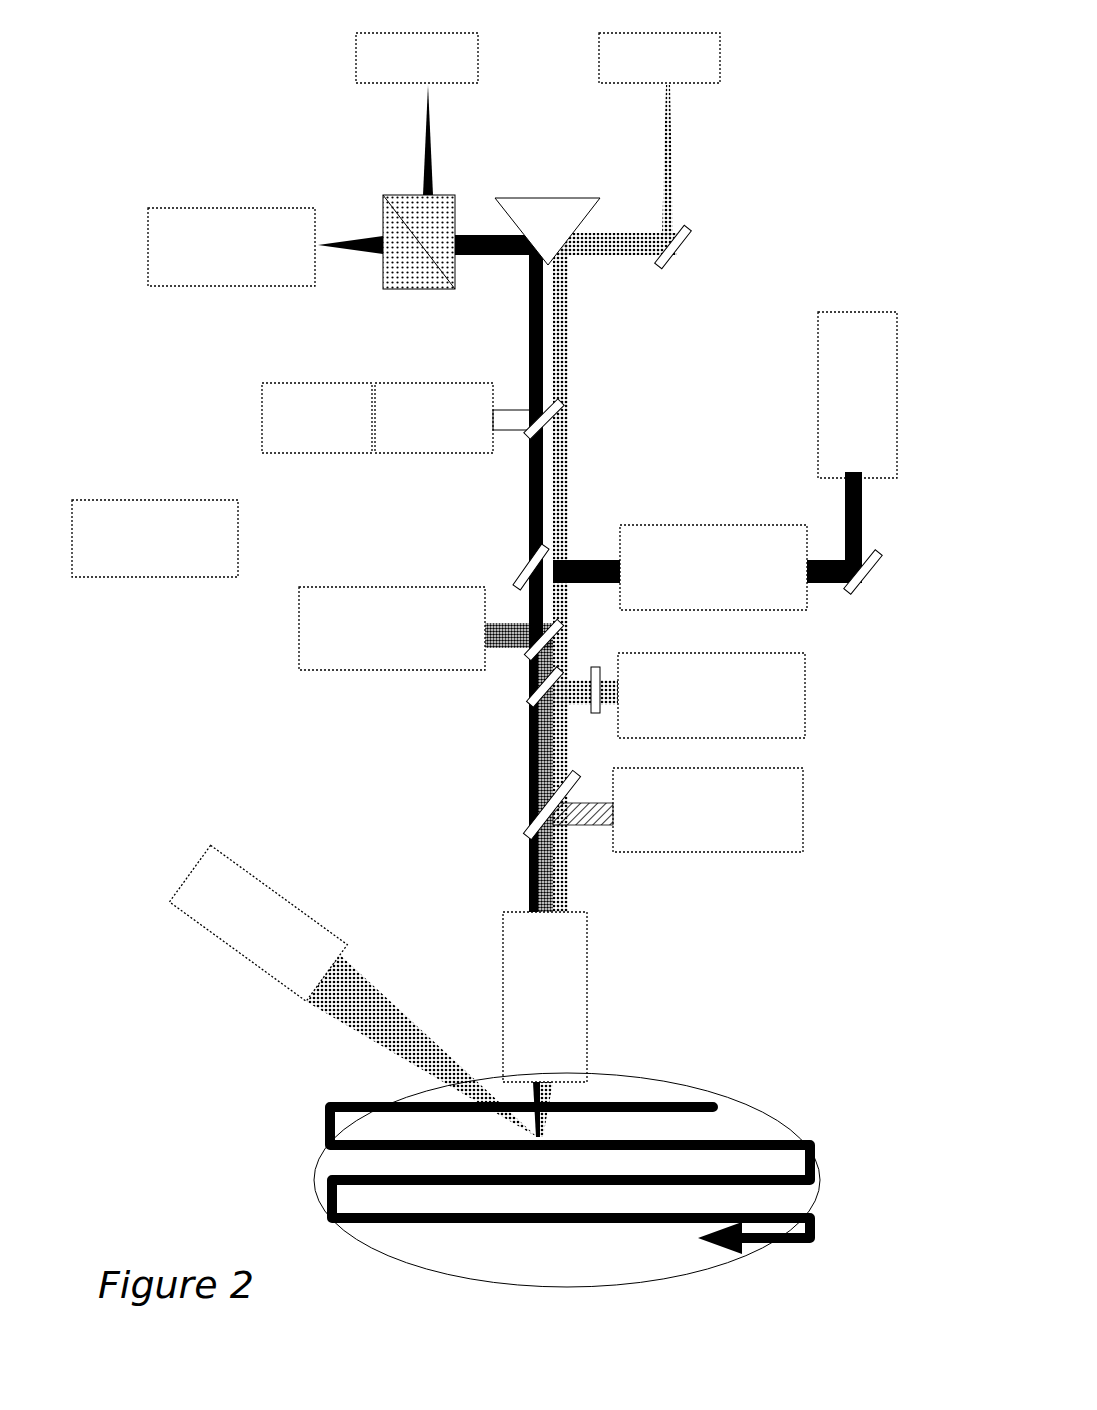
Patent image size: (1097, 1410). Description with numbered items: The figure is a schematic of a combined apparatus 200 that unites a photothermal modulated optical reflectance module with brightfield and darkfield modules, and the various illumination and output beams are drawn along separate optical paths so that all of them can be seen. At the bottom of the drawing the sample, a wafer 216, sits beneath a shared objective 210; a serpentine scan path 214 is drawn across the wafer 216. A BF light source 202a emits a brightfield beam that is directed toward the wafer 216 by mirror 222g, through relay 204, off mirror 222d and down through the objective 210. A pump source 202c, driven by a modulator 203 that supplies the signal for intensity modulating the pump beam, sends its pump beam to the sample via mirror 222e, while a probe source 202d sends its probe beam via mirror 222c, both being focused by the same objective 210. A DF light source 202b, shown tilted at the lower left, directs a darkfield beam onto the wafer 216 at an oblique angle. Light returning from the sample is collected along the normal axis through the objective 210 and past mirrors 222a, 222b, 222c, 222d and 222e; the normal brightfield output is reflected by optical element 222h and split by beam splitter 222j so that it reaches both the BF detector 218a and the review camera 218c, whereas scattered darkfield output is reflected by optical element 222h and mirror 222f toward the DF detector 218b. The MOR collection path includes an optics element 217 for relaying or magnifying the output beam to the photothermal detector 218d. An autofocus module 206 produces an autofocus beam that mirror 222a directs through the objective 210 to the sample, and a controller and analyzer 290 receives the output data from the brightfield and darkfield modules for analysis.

The combined apparatus 200 is at (852, 103).
The BF light source 202a is at (855, 312).
The DF light source 202b is at (283, 890).
The pump source 202c is at (378, 383).
The probe source 202d is at (345, 587).
The modulator 203 is at (262, 395).
The relay 204 is at (785, 612).
The autofocus module 206 is at (803, 823).
The objective 210 is at (587, 960).
The scan path 214 is at (482, 1225).
The wafer 216 is at (777, 1113).
The optics element 217 is at (596, 714).
The BF detector 218a is at (356, 50).
The DF detector 218b is at (599, 56).
The review camera 218c is at (148, 222).
The photothermal detector 218d is at (806, 690).
The mirror 222a is at (527, 830).
The mirror 222b is at (530, 700).
The mirror 222c is at (563, 628).
The mirror 222d is at (520, 570).
The mirror 222e is at (563, 408).
The mirror 222f is at (688, 240).
The mirror 222g is at (868, 588).
The optical element 222h is at (548, 198).
The beam splitter 222j is at (390, 195).
The controller and analyzer 290 is at (118, 500).